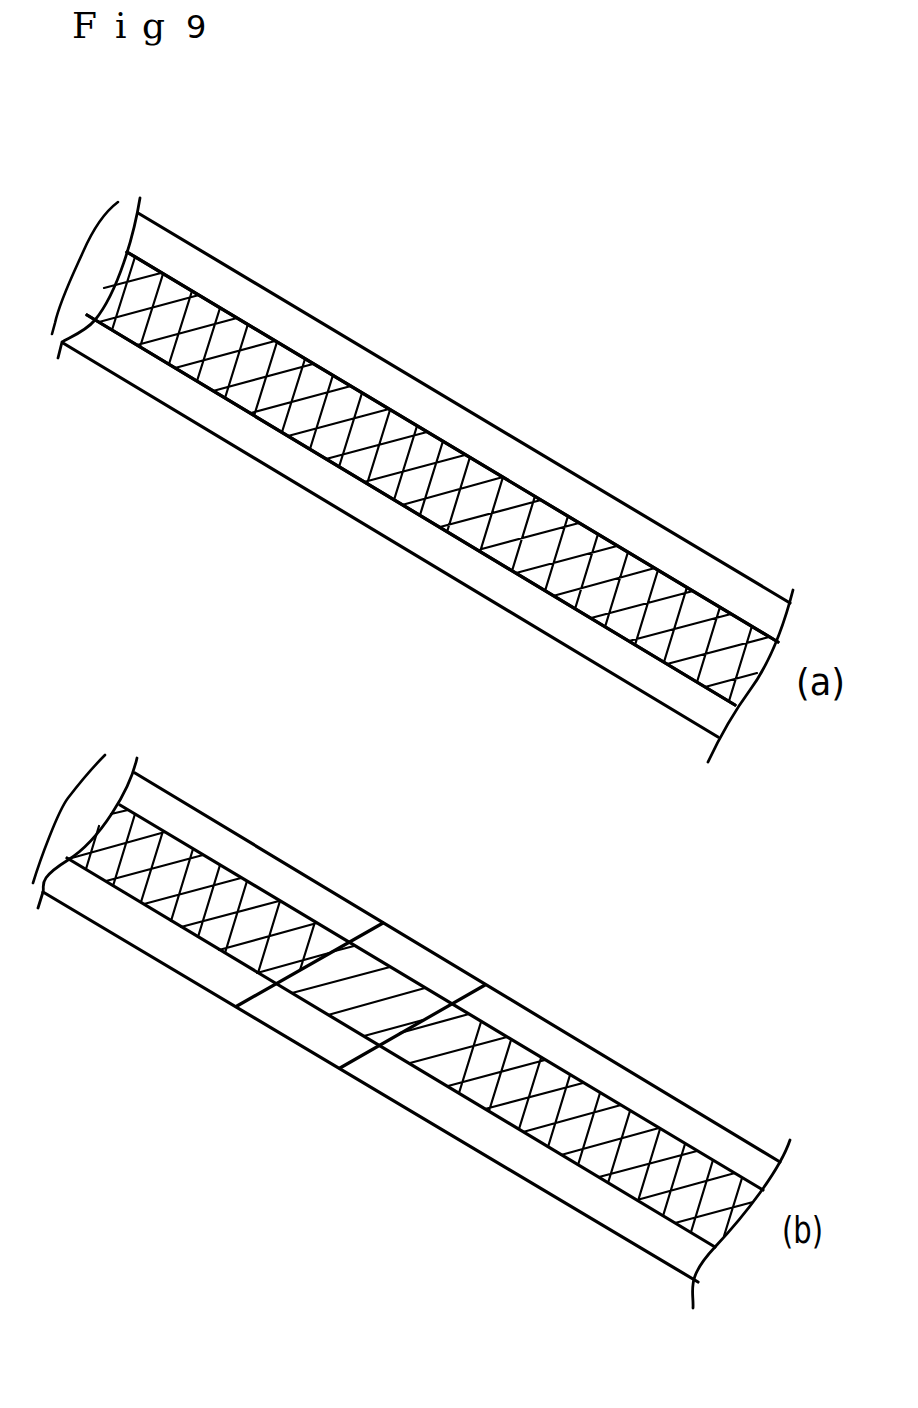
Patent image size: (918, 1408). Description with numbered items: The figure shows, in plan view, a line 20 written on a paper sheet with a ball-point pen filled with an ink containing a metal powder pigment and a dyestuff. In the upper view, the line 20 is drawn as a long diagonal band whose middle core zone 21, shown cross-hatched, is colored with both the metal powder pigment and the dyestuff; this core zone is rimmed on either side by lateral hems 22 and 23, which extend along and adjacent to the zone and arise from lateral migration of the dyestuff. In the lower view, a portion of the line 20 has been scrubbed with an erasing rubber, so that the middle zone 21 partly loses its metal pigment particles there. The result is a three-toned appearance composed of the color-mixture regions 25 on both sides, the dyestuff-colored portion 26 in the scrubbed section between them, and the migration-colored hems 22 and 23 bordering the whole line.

The line 20 is at (83, 252).
The middle core zone 21 is at (285, 362).
The lateral hem 22 is at (304, 470).
The lateral hem 23 is at (580, 502).
The color-mixture region 25 is at (240, 893).
The dyestuff-colored portion 26 is at (393, 985).